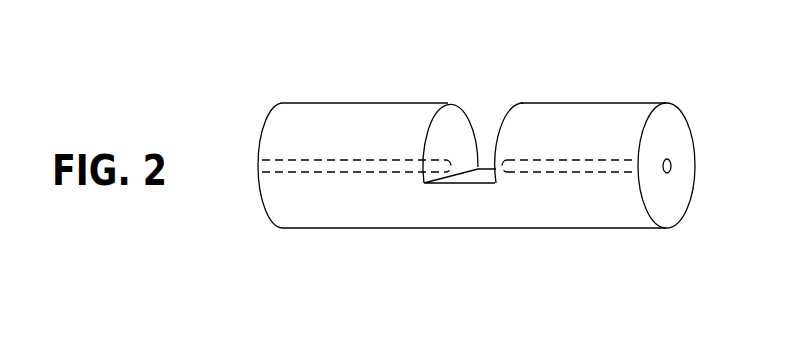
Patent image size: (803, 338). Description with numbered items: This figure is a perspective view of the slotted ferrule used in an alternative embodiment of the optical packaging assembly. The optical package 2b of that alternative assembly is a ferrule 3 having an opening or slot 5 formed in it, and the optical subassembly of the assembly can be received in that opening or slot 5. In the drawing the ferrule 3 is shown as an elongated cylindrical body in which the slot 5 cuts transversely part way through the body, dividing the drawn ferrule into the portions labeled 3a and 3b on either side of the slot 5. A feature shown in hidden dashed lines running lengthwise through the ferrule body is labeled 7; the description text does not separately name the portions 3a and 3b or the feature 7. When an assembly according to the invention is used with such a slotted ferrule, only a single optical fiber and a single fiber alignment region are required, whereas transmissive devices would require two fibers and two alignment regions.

The optical package 2b is at (263, 72).
The ferrule 3 is at (452, 218).
The first cylindrical portion 3a is at (357, 117).
The second cylindrical portion 3b is at (590, 115).
The slot 5 is at (487, 111).
The axial bore 7 is at (259, 167).